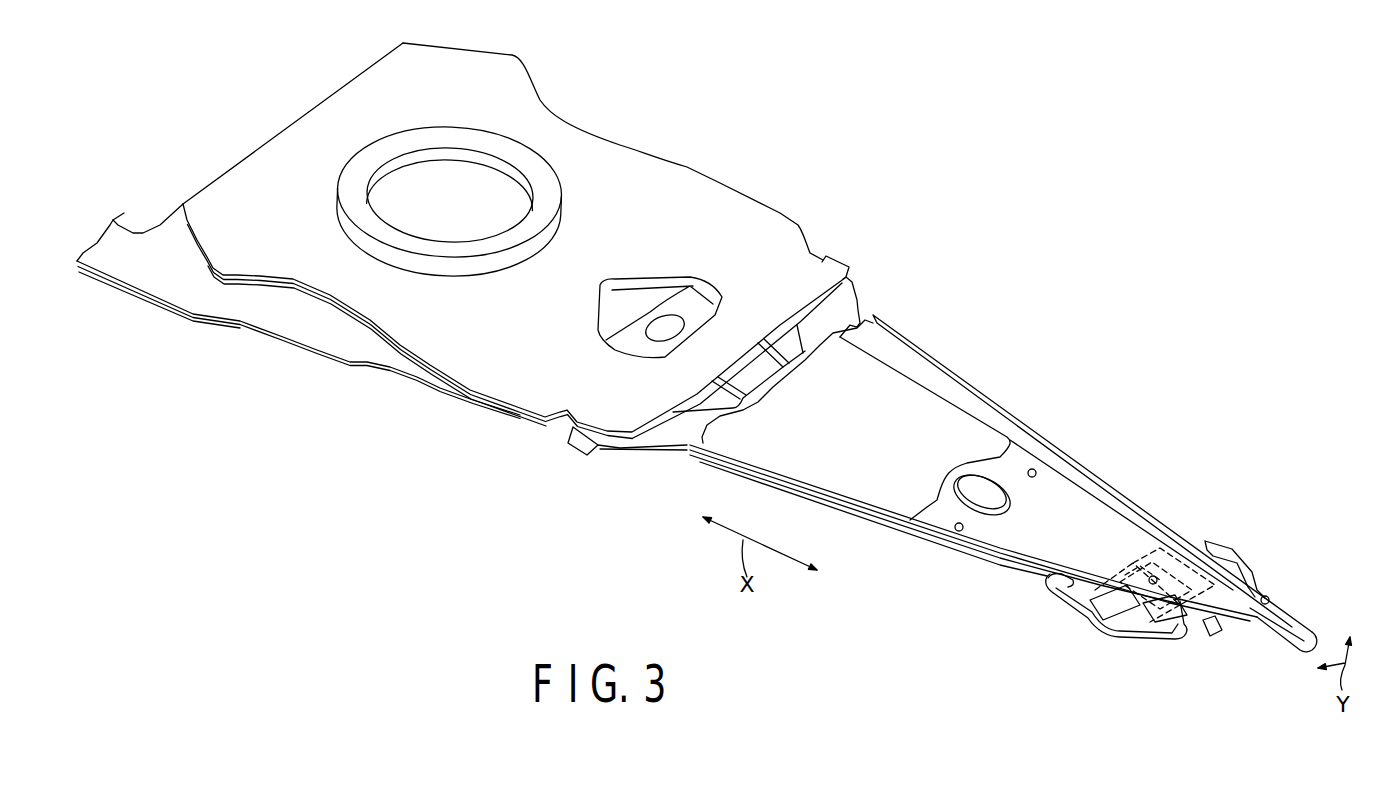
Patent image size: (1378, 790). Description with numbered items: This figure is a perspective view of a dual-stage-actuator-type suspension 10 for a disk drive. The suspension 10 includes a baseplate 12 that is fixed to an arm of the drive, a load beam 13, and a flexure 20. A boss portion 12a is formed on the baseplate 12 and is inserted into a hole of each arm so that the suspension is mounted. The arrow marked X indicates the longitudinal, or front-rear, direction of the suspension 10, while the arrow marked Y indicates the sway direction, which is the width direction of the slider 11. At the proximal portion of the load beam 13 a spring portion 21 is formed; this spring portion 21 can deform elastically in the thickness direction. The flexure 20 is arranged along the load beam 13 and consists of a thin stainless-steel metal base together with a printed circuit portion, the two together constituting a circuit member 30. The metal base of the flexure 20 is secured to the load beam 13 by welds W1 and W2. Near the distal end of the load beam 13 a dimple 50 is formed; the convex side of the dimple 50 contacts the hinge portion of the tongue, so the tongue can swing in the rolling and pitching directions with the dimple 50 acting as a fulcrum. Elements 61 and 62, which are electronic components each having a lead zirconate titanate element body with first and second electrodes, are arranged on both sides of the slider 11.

The suspension 10 is at (1003, 510).
The slider 11 is at (1133, 563).
The baseplate 12 is at (468, 241).
The boss portion 12a is at (531, 165).
The load beam 13 is at (1092, 488).
The flexure 20 is at (1155, 508).
The spring portion 21 is at (857, 305).
The circuit member 30 is at (368, 372).
The dimple 50 is at (1153, 580).
The element 61 is at (1205, 541).
The element 62 is at (1132, 625).
The weld W1 is at (1032, 473).
The weld W2 is at (1248, 574).